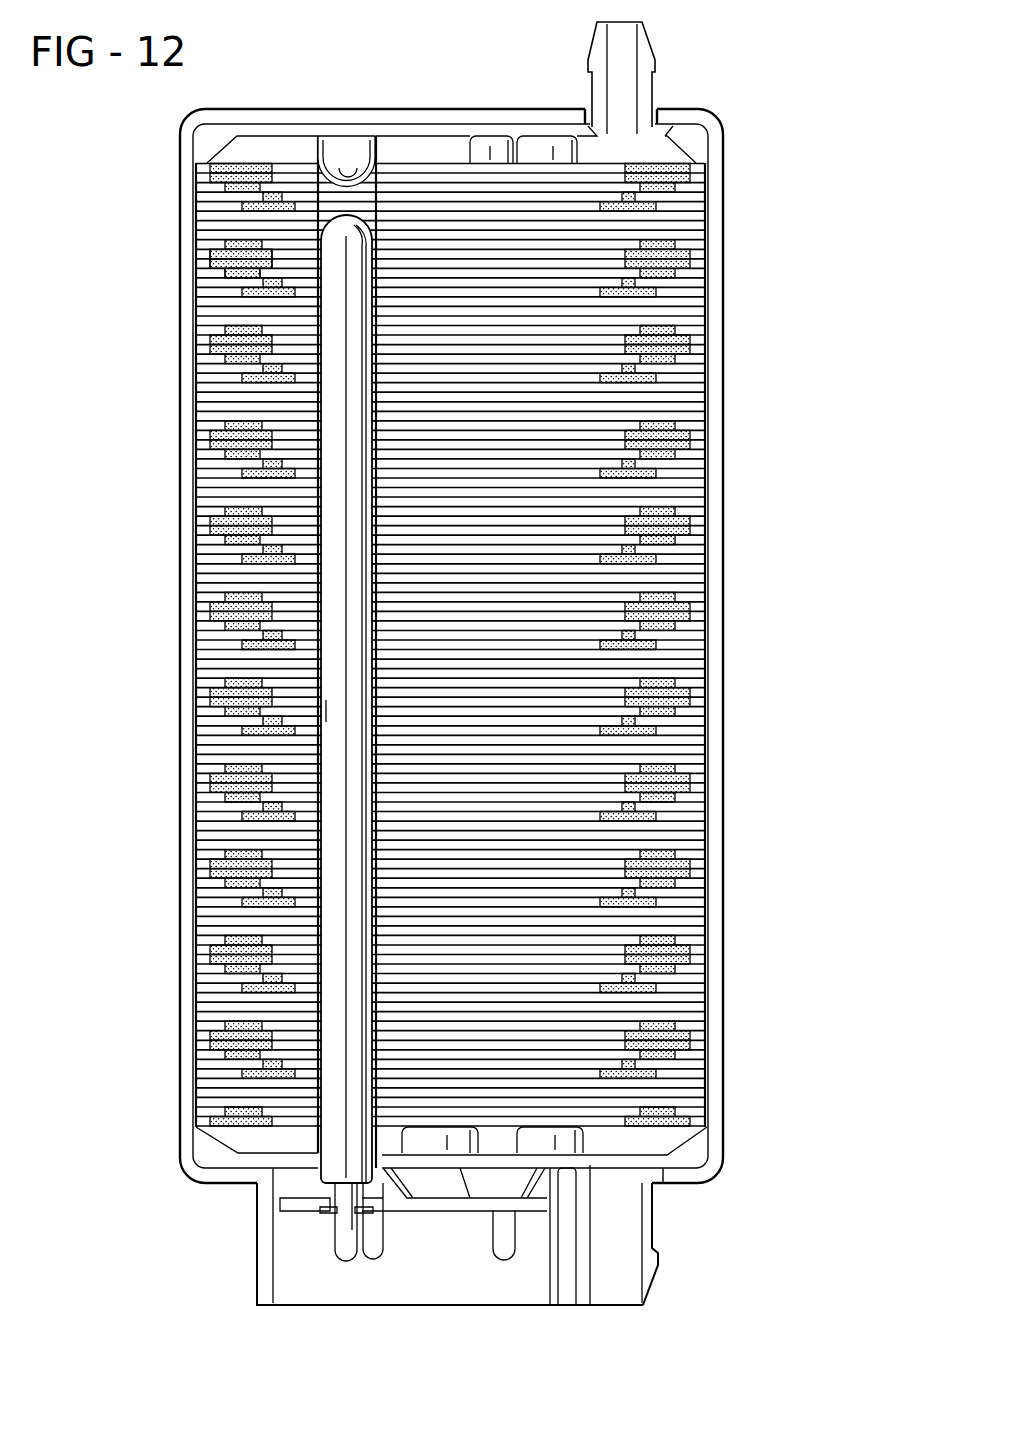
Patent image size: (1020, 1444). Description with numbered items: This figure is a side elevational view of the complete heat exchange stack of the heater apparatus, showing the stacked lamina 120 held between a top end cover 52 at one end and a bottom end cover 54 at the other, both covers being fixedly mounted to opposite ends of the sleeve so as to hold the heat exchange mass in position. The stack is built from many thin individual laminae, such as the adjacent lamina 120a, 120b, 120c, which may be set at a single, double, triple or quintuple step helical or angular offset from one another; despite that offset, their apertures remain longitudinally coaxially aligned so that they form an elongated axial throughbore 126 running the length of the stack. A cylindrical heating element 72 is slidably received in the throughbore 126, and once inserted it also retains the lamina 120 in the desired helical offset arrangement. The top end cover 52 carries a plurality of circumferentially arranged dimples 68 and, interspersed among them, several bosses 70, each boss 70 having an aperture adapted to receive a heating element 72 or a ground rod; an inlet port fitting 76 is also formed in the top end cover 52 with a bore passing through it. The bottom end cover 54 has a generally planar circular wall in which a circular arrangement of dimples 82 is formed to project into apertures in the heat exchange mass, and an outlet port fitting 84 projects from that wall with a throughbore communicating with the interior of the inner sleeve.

The top end cover 52 is at (268, 1252).
The bottom end cover 54 is at (657, 156).
The dimples 68 is at (568, 1140).
The bosses 70 is at (557, 1197).
The heating element 72 is at (330, 367).
The inlet port fitting 76 is at (585, 1280).
The dimples 82 is at (352, 150).
The outlet port fitting 84 is at (645, 62).
The lamina 120 is at (224, 203).
The lamina 120a is at (197, 249).
The lamina 120b is at (197, 262).
The lamina 120c is at (197, 272).
The axial throughbore 126 is at (330, 712).